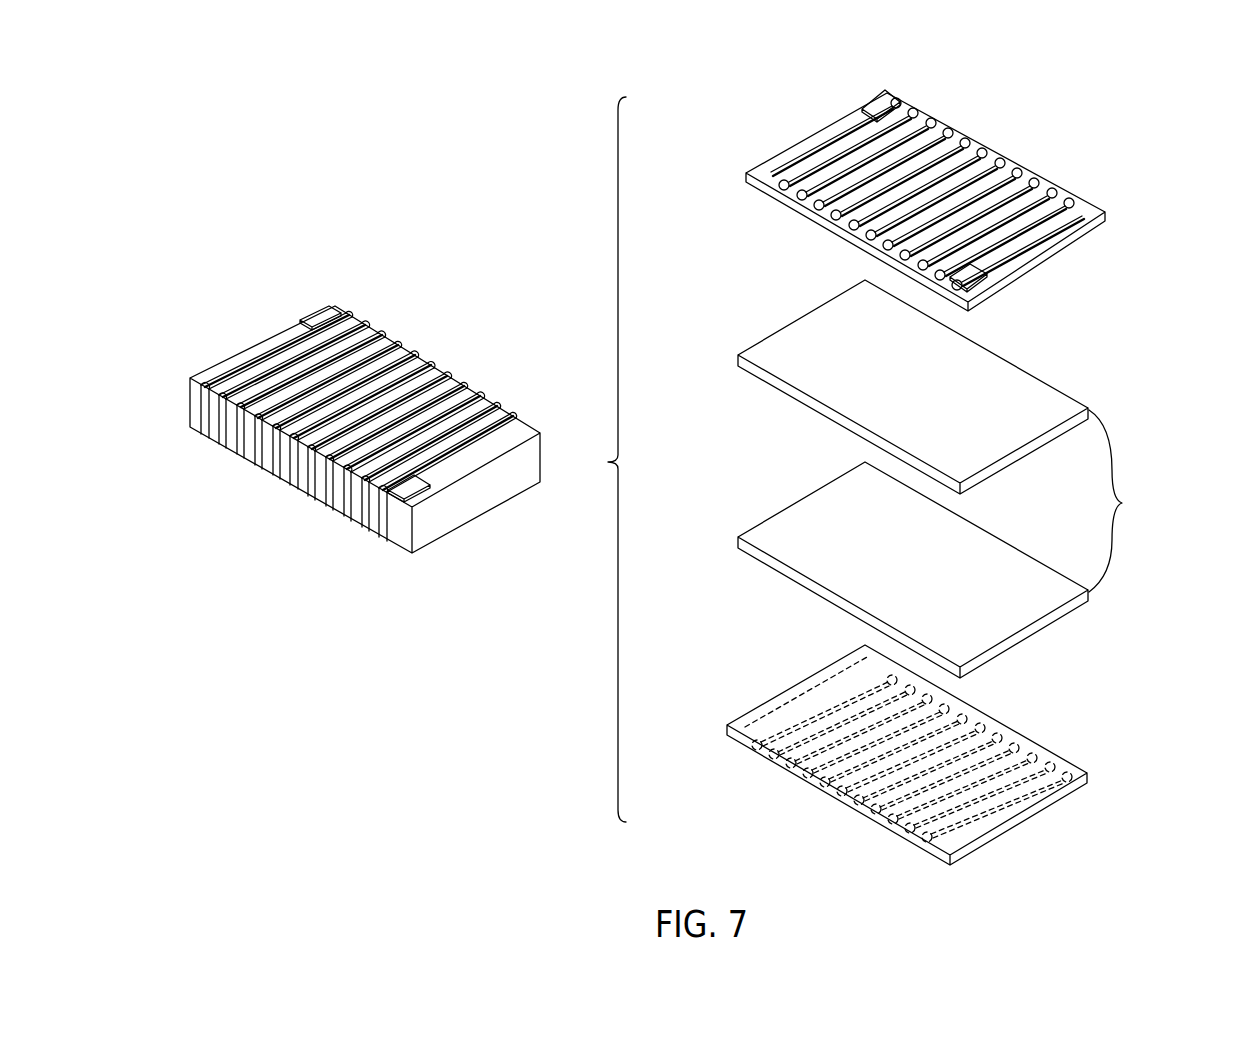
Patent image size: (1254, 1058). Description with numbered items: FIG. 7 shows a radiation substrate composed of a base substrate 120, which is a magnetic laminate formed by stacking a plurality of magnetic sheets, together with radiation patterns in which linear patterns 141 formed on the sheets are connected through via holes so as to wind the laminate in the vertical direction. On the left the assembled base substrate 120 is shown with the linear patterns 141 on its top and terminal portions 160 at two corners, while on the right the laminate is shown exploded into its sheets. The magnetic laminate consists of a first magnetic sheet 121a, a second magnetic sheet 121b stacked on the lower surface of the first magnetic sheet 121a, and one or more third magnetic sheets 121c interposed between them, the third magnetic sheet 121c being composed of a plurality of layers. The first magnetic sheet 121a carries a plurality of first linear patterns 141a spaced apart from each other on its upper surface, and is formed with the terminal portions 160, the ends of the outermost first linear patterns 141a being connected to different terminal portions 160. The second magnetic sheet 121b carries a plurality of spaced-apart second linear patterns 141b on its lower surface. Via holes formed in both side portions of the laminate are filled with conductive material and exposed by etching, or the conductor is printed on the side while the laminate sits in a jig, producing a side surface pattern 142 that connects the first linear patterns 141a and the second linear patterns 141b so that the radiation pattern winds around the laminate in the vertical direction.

The base substrate 120 is at (505, 503).
The linear pattern 141 is at (428, 377).
The side surface pattern 142 is at (368, 530).
The terminal portion 160 is at (322, 320).
The first magnetic sheet 121a is at (1105, 224).
The first linear pattern 141a is at (983, 165).
The third magnetic sheet 121c is at (959, 479).
The second magnetic sheet 121b is at (1090, 777).
The second linear pattern 141b is at (817, 710).